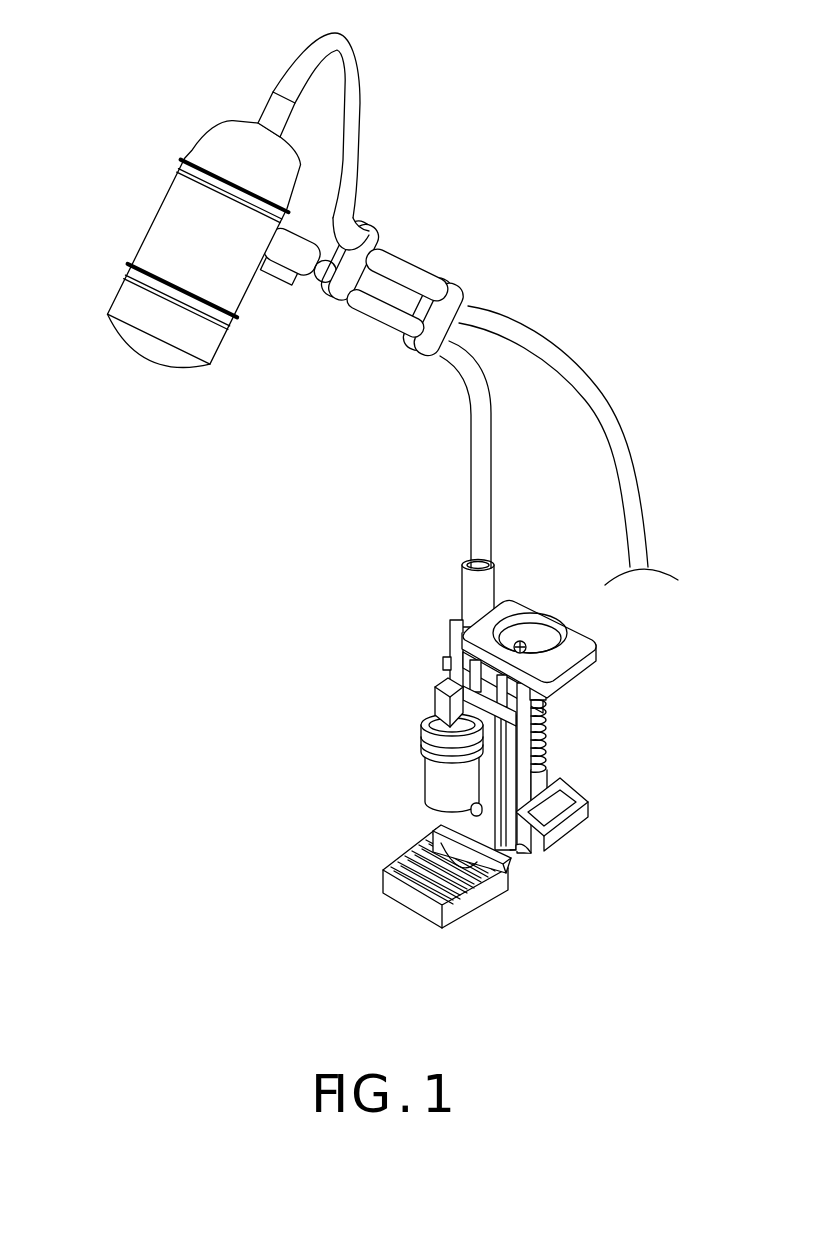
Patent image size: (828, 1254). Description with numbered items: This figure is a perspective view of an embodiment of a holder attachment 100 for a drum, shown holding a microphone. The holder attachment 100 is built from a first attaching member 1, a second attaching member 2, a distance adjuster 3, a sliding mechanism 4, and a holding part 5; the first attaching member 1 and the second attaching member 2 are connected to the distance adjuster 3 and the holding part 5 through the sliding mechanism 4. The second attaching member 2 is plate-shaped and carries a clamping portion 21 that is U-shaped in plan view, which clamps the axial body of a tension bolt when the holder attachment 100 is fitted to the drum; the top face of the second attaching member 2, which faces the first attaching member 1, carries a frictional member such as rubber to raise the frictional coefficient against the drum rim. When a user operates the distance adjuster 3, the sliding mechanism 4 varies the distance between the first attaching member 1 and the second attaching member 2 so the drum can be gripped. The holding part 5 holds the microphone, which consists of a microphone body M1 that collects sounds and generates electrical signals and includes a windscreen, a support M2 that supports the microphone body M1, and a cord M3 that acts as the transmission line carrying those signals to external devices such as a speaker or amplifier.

The holder attachment 100 is at (312, 685).
The first attaching member 1 is at (404, 777).
The second attaching member 2 is at (460, 939).
The clamping portion 21 is at (430, 850).
The distance adjuster 3 is at (604, 742).
The sliding mechanism 4 is at (530, 861).
The holding part 5 is at (477, 595).
The microphone body M1 is at (162, 210).
The support M2 is at (390, 320).
The cord M3 is at (405, 275).